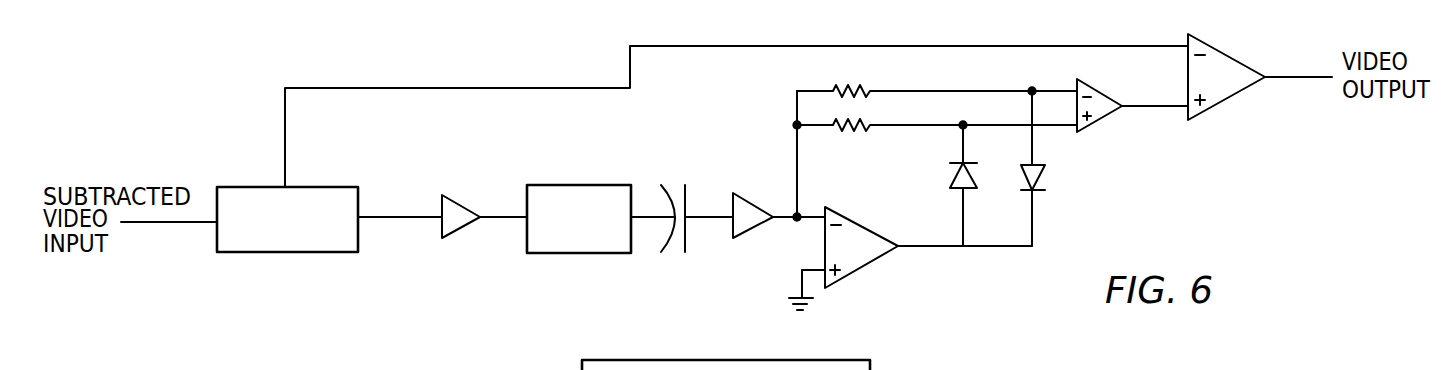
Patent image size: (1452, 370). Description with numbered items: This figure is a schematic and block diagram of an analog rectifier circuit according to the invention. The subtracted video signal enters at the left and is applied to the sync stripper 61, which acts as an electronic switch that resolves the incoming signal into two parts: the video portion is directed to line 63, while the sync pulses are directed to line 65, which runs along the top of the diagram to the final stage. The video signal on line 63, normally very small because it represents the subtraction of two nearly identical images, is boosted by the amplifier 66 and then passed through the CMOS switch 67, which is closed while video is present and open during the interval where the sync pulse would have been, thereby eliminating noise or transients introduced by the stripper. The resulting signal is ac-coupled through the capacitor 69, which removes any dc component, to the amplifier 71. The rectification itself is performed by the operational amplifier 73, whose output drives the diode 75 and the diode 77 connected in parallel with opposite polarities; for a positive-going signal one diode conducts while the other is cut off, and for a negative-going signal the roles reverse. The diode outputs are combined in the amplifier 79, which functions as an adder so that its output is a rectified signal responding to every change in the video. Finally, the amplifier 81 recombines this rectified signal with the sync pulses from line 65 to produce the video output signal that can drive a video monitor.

The sync stripper 61 is at (305, 193).
The line 63 is at (423, 218).
The line 65 is at (572, 87).
The amplifier 66 is at (467, 212).
The CMOS switch 67 is at (595, 192).
The capacitor 69 is at (675, 185).
The amplifier 71 is at (745, 202).
The operational amplifier 73 is at (865, 250).
The diode 75 is at (962, 200).
The diode 77 is at (1043, 173).
The amplifier 79 is at (1100, 110).
The amplifier 81 is at (1220, 95).